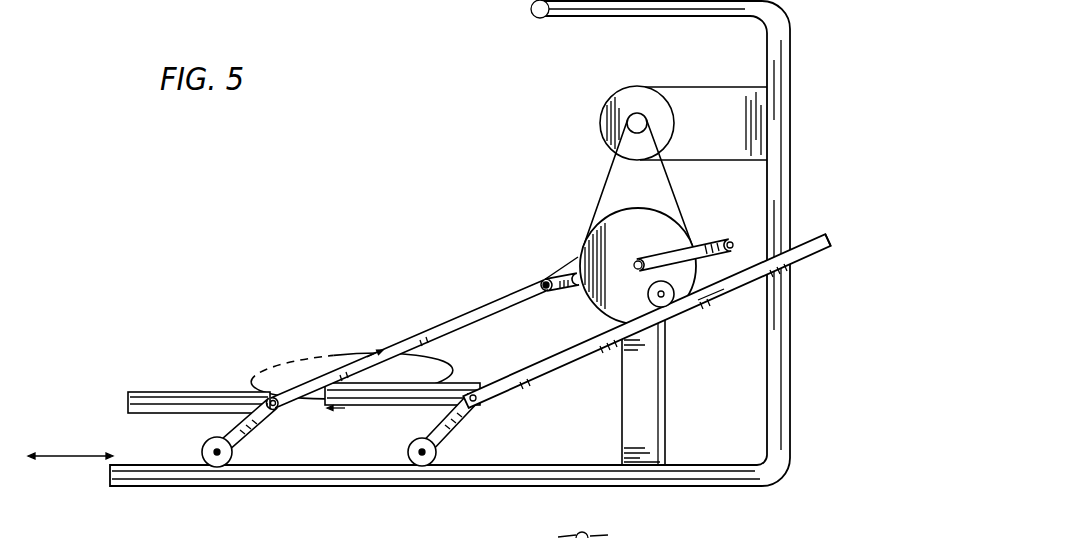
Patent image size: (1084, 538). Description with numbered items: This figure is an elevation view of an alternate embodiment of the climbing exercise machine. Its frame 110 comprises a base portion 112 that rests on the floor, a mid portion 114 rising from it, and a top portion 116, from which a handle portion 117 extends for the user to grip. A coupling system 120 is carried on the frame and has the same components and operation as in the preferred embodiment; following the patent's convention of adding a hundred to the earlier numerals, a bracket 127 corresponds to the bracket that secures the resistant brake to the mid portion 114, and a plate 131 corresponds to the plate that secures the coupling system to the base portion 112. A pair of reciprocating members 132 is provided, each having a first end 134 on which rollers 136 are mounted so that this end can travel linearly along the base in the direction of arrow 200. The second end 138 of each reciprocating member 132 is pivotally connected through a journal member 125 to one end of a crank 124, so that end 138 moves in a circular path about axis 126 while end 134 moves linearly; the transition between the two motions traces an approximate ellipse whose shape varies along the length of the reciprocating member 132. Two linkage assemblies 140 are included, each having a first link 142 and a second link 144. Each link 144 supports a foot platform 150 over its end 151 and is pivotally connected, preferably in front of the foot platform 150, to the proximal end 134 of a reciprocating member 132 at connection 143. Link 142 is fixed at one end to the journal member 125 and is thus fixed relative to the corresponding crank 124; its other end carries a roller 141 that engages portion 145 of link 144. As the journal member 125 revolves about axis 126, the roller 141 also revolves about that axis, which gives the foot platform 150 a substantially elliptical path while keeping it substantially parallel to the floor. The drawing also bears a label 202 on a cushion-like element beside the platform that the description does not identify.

The frame 110 is at (492, 266).
The base portion 112 is at (543, 487).
The mid portion 114 is at (793, 387).
The top portion 116 is at (680, 6).
The handle portion 117 is at (535, 19).
The coupling system 120 is at (580, 212).
The crank 124 is at (690, 224).
The journal member 125 is at (545, 283).
The axis 126 is at (640, 259).
The bracket 127 is at (745, 113).
The plate 131 is at (655, 432).
The reciprocating member 132 is at (558, 339).
The first end 134 is at (242, 444).
The rollers 136 is at (201, 465).
The second end 138 is at (533, 290).
The linkage assembly 140 is at (565, 257).
The roller 141 is at (671, 306).
The first link 142 is at (800, 228).
The connection 143 is at (477, 400).
The second link 144 is at (711, 301).
The portion of link 144 145 is at (674, 315).
The foot platform 150 is at (185, 391).
The end of link 144 151 is at (343, 396).
The arrow 200 is at (70, 454).
The seat cushion 202 is at (278, 360).